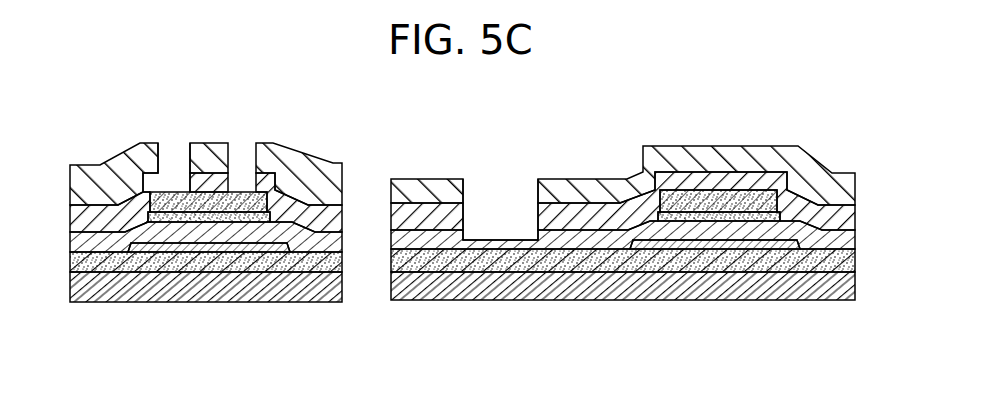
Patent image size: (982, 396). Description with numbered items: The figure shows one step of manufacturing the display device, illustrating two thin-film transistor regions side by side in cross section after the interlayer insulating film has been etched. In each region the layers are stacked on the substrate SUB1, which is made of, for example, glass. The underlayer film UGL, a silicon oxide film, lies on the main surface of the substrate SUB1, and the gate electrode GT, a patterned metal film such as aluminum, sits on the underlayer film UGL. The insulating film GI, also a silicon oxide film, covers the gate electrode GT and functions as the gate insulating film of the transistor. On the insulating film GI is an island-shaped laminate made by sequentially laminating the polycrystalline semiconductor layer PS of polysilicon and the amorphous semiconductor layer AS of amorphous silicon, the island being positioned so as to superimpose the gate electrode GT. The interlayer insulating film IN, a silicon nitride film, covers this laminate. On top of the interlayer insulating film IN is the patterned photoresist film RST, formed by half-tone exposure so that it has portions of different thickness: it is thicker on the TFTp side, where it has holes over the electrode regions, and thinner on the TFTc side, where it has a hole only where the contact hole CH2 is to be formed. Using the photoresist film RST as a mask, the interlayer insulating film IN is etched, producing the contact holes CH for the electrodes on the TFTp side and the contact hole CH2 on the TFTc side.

The substrate SUB1 is at (102, 283).
The underlayer film UGL is at (265, 273).
The gate electrode GT is at (197, 250).
The insulating film GI is at (318, 247).
The polycrystalline semiconductor layer PS is at (247, 218).
The amorphous semiconductor layer AS is at (194, 198).
The interlayer insulating film IN is at (93, 212).
The photoresist film RST is at (309, 168).
The contact hole CH is at (165, 183).
The contact hole CH2 is at (466, 212).